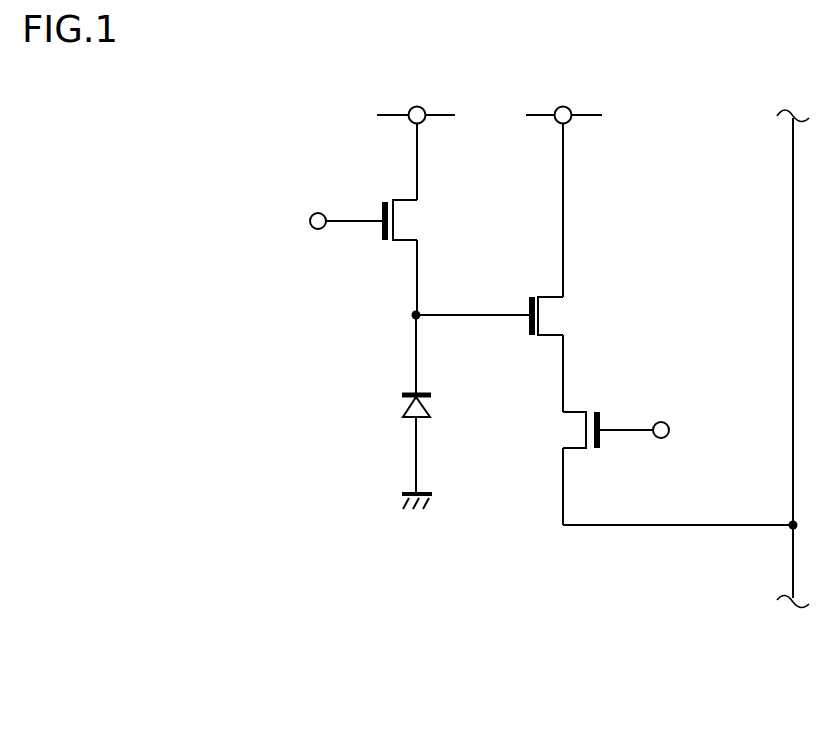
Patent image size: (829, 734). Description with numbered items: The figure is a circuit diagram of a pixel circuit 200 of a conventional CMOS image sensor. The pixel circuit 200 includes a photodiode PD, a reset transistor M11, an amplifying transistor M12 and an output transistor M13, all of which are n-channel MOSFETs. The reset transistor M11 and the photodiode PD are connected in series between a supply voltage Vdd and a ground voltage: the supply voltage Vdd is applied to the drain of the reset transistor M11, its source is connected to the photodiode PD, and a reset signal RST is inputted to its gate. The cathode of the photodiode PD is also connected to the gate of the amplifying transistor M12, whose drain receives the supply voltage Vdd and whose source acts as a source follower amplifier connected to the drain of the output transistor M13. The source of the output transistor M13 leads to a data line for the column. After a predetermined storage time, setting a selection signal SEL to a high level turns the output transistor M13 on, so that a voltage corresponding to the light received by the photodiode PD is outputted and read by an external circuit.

The pixel circuit 200 is at (588, 722).
The reset transistor M11 is at (432, 219).
The amplifying transistor M12 is at (522, 267).
The output transistor M13 is at (595, 468).
The photodiode PD is at (437, 404).
The supply voltage Vdd is at (386, 115).
The reset signal RST is at (316, 220).
The selection signal SEL is at (664, 430).